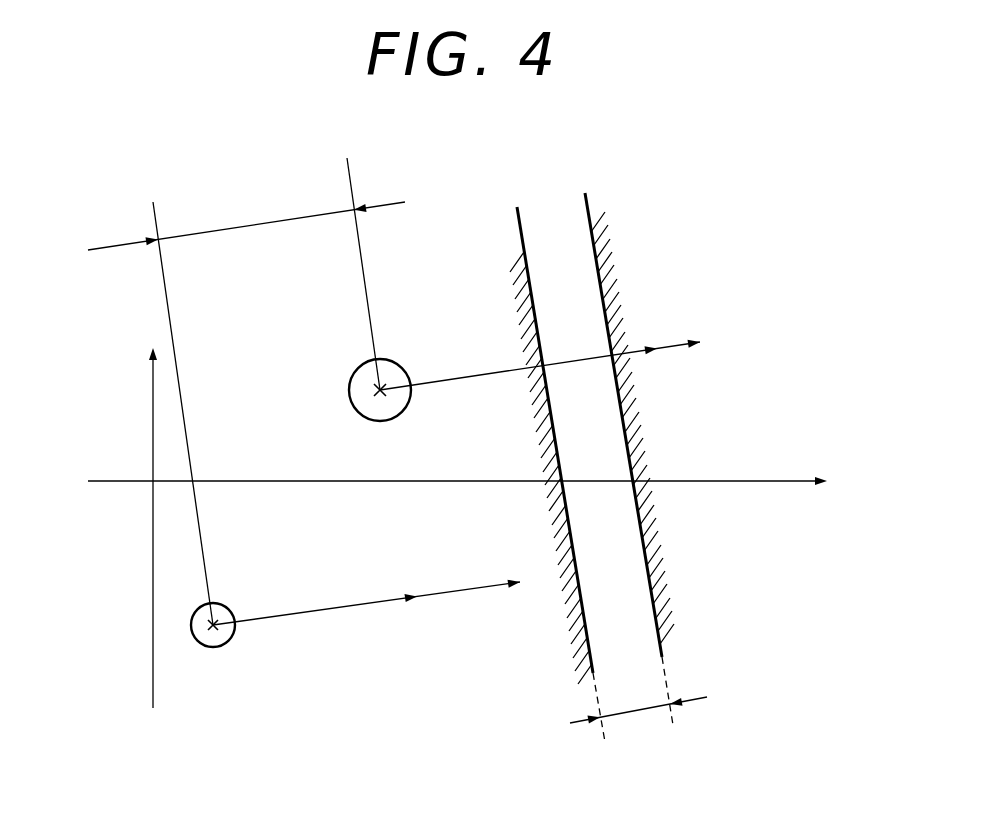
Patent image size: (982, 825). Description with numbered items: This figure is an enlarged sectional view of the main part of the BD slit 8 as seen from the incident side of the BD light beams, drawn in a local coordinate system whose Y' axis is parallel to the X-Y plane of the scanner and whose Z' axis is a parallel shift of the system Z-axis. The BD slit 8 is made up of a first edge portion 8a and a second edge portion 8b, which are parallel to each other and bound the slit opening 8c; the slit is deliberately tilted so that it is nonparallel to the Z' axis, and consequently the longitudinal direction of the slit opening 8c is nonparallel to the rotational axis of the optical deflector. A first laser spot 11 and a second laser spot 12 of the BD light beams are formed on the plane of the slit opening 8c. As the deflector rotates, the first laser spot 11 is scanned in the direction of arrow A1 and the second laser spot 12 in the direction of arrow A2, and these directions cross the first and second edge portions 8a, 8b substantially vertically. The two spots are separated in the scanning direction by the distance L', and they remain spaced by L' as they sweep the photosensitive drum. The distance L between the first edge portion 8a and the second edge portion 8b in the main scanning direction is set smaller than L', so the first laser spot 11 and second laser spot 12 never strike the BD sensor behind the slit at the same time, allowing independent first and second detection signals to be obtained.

The BD slit 8 is at (585, 388).
The first edge portion 8a is at (517, 217).
The second edge portion 8b is at (588, 212).
The slit opening 8c is at (577, 253).
The first laser spot 11 is at (357, 376).
The second laser spot 12 is at (191, 625).
The scanning direction arrow of first laser spot A1 is at (662, 347).
The scanning direction arrow of second laser spot A2 is at (421, 598).
The distance between first and second edge portions L is at (638, 720).
The distance between first and second laser spots L' is at (246, 223).
The Y'-axis Y' is at (474, 480).
The Z'-axis Z' is at (139, 526).